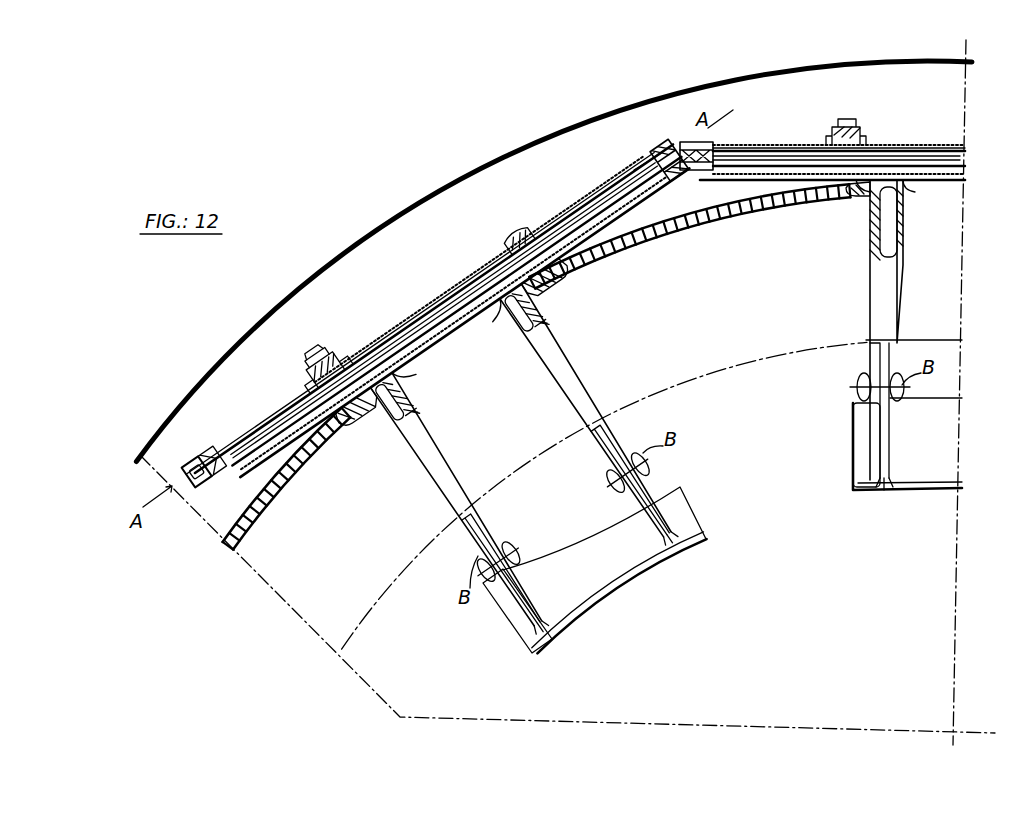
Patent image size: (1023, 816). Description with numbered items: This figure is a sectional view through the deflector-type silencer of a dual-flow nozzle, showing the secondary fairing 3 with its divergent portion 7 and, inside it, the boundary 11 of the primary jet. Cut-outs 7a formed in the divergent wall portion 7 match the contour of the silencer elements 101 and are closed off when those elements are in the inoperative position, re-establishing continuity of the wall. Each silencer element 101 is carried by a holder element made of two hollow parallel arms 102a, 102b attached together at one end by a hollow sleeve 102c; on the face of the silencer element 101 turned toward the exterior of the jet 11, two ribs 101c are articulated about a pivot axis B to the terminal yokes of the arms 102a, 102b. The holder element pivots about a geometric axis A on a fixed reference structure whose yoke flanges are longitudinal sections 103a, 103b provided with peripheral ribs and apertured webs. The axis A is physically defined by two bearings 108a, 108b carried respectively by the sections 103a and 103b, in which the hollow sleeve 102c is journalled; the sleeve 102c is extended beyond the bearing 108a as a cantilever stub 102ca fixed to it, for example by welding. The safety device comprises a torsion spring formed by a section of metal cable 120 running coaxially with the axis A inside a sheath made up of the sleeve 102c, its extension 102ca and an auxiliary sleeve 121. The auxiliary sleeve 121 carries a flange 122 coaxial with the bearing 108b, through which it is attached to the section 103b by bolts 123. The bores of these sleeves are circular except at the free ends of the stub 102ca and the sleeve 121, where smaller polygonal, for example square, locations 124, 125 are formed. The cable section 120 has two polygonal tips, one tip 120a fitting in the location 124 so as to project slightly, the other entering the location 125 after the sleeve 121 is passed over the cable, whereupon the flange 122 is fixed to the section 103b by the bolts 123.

The secondary fairing 3 is at (557, 123).
The divergent portion 7 is at (702, 226).
The cut-outs 7a is at (862, 200).
The boundary of the primary jet 11 is at (751, 353).
The silencer element 101 is at (929, 476).
The ribs 101c is at (860, 434).
The hollow arm 102a is at (587, 420).
The hollow arm 102b is at (893, 305).
The hollow sleeve 102c is at (442, 320).
The cantilever stub 102ca is at (608, 195).
The longitudinal section 103a is at (518, 239).
The longitudinal section 103b is at (323, 366).
The bearing 108a is at (546, 278).
The bearing 108b is at (357, 409).
The metal cable section 120 is at (444, 311).
The polygonal tip 120a is at (686, 143).
The auxiliary sleeve 121 is at (420, 314).
The flange 122 is at (329, 375).
The bolts 123 is at (313, 352).
The polygonal location 124 is at (669, 160).
The polygonal location 125 is at (204, 466).